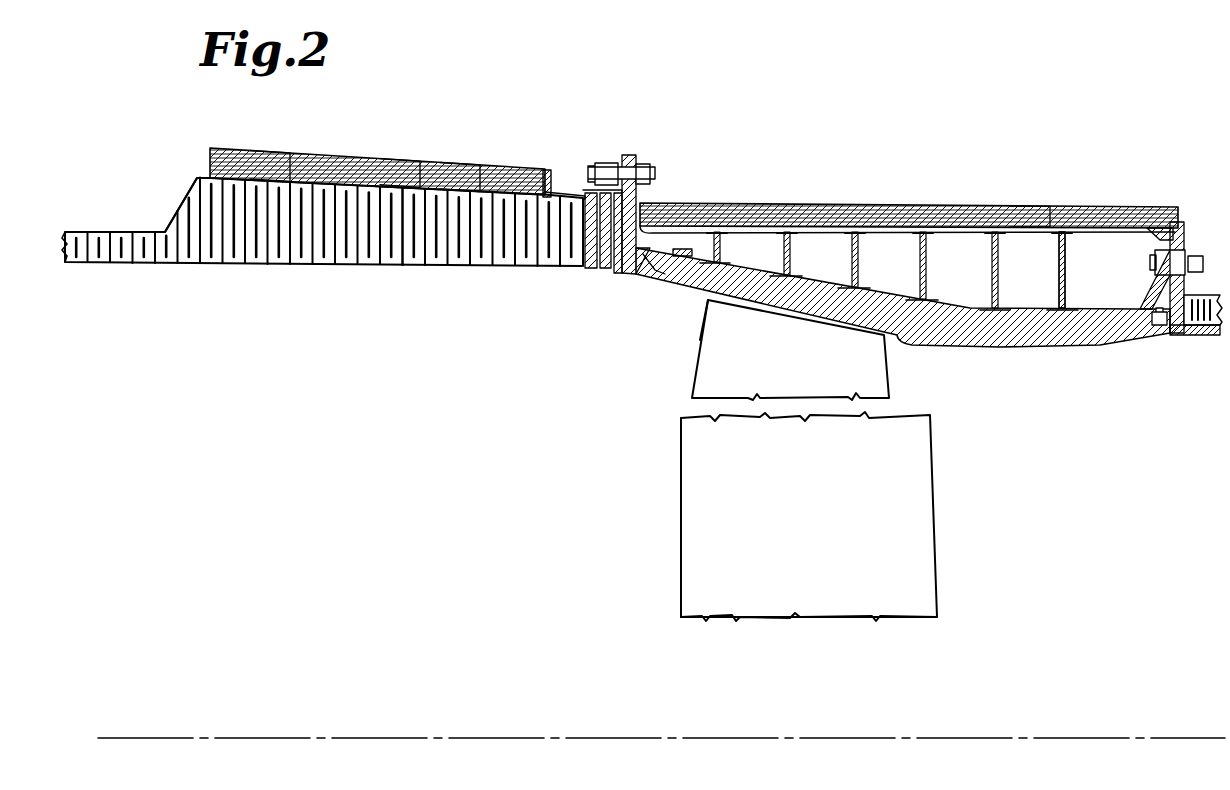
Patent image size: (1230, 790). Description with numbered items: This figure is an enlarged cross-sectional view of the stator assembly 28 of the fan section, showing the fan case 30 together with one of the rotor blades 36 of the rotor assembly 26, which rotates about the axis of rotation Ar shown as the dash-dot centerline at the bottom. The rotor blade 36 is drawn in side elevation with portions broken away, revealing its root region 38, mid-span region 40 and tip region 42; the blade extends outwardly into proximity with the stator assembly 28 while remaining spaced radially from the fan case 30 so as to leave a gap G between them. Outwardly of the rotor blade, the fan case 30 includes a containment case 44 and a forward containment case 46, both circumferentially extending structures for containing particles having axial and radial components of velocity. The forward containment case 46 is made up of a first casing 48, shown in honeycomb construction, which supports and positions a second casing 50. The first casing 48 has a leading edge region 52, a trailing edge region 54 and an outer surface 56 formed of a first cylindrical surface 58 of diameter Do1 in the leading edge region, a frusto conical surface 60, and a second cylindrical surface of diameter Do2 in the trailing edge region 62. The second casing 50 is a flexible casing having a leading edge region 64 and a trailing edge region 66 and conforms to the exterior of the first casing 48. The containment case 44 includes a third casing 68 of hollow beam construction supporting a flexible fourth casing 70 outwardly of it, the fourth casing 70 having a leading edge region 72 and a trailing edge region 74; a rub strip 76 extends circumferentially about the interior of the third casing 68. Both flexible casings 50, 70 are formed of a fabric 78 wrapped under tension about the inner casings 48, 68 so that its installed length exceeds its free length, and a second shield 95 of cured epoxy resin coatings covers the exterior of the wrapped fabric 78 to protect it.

The rotor assembly 26 is at (757, 461).
The stator assembly 28 is at (866, 128).
The fan case 30 is at (1178, 338).
The rotor blade 36 is at (681, 517).
The root region 38 is at (813, 607).
The mid-span region 40 is at (790, 454).
The tip region 42 is at (813, 352).
The containment case 44 is at (878, 203).
The forward containment case 46 is at (352, 266).
The first casing 48 is at (337, 224).
The second casing 50 is at (340, 156).
The leading edge region 52 is at (208, 246).
The trailing edge region 54 is at (571, 252).
The outer surface 56 is at (428, 191).
The first cylindrical surface 58 is at (216, 180).
The frusto conical surface 60 is at (402, 193).
The trailing edge region 62 is at (527, 199).
The leading edge region 64 is at (267, 164).
The trailing edge region 66 is at (510, 173).
The third casing 68 is at (1074, 263).
The fourth casing 70 is at (921, 208).
The leading edge region 72 is at (645, 202).
The trailing edge region 74 is at (1141, 223).
The rub strip 76 is at (1046, 328).
The fabric 78 is at (447, 163).
The second shield 95 is at (395, 158).
The gap G is at (670, 268).
The first cylindrical surface diameter Do1 is at (236, 740).
The second cylindrical surface diameter Do2 is at (521, 740).
The axis of rotation Ar is at (355, 738).